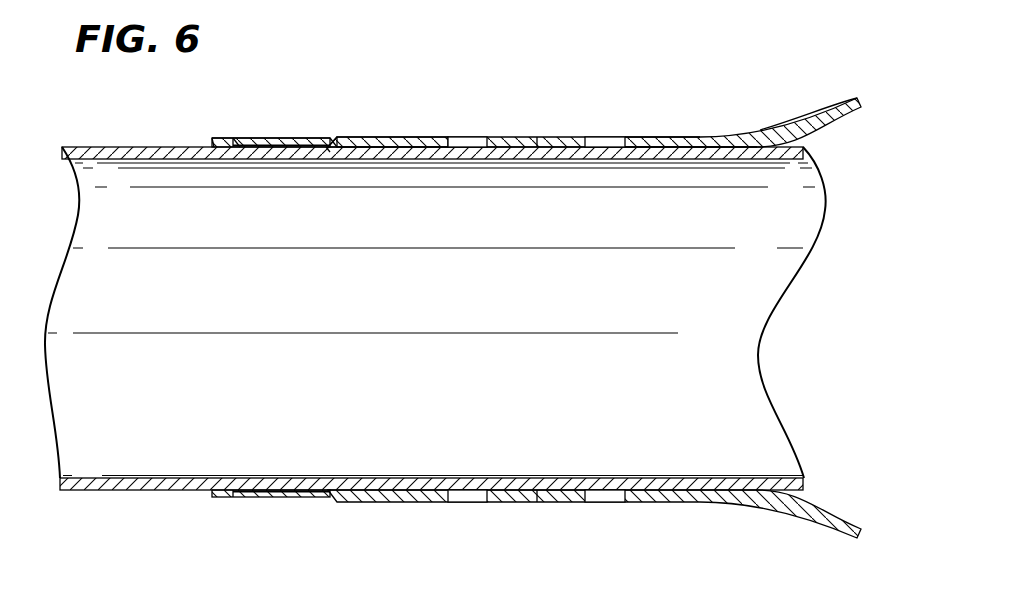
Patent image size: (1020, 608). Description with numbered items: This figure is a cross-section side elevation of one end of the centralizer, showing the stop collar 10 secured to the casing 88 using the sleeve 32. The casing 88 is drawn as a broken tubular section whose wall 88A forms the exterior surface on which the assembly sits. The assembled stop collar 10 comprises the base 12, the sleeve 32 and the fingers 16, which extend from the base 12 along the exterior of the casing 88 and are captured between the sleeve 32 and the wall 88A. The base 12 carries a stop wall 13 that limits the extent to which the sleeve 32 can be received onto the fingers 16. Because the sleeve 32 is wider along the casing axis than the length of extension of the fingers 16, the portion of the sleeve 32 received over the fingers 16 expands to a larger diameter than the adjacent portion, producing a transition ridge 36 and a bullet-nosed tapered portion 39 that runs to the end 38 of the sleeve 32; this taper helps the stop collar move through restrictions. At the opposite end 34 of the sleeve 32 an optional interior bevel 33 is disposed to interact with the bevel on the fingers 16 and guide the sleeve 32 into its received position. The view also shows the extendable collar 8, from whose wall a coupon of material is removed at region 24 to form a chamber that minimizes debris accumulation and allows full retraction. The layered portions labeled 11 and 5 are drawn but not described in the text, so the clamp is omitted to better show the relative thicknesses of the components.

The casing 88 is at (206, 306).
The wall of the casing 88A is at (100, 147).
The extendable collar 8 is at (500, 89).
The base 12 is at (388, 137).
The region 24 is at (472, 142).
The second layer 11 is at (643, 137).
The free end of sheet 5 is at (827, 110).
The sleeve 32 is at (290, 138).
The end of the sleeve 38 is at (212, 143).
The tapered portion 39 is at (213, 142).
The transition ridge 36 is at (237, 142).
The fingers 16 is at (237, 147).
The end of the sleeve 34 is at (333, 140).
The stop wall 13 is at (330, 140).
The interior bevel 33 is at (327, 150).
The stop collar 10 is at (252, 118).